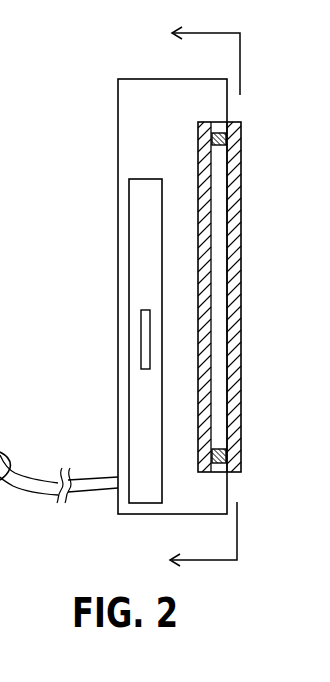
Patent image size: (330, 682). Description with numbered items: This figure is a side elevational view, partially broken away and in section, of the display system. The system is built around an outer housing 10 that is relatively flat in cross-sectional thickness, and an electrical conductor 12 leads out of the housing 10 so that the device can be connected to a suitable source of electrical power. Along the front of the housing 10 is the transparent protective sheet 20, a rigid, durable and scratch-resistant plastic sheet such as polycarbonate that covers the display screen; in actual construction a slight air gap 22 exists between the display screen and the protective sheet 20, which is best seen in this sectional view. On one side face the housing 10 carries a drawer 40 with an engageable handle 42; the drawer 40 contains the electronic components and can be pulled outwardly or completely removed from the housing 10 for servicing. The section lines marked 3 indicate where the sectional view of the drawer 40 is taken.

The outer housing 10 is at (144, 109).
The electrical conductor 12 is at (38, 486).
The transparent protective sheet 20 is at (241, 274).
The air gap 22 is at (222, 187).
The drawer 40 is at (143, 270).
The engageable handle 42 is at (143, 357).
The section line 3- 3 is at (194, 297).